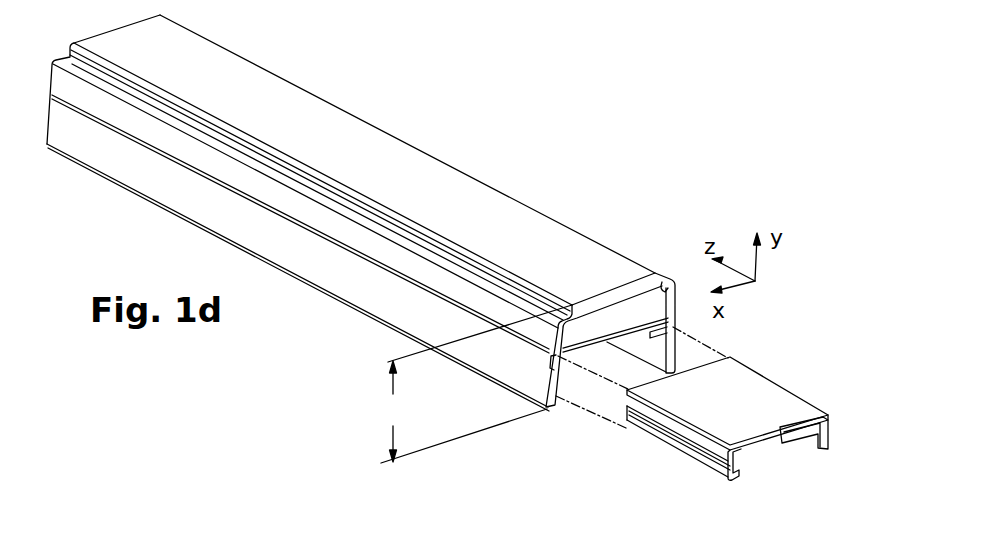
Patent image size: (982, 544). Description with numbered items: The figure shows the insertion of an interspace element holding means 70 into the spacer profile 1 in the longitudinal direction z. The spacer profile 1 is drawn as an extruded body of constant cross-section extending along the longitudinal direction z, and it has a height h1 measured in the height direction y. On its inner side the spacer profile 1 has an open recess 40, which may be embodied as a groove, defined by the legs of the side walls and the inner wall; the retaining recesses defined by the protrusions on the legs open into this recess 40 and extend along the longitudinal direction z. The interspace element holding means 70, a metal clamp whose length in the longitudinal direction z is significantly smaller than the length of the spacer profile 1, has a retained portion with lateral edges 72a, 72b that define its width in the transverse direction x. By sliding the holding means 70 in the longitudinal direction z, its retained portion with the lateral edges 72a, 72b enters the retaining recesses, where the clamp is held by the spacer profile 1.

The spacer profile 1 is at (624, 167).
The open recess 40 is at (598, 372).
The interspace element holding means 70 is at (772, 448).
The lateral edge 72a is at (717, 438).
The lateral edge 72b is at (825, 415).
The height of the spacer profile h1 is at (476, 384).